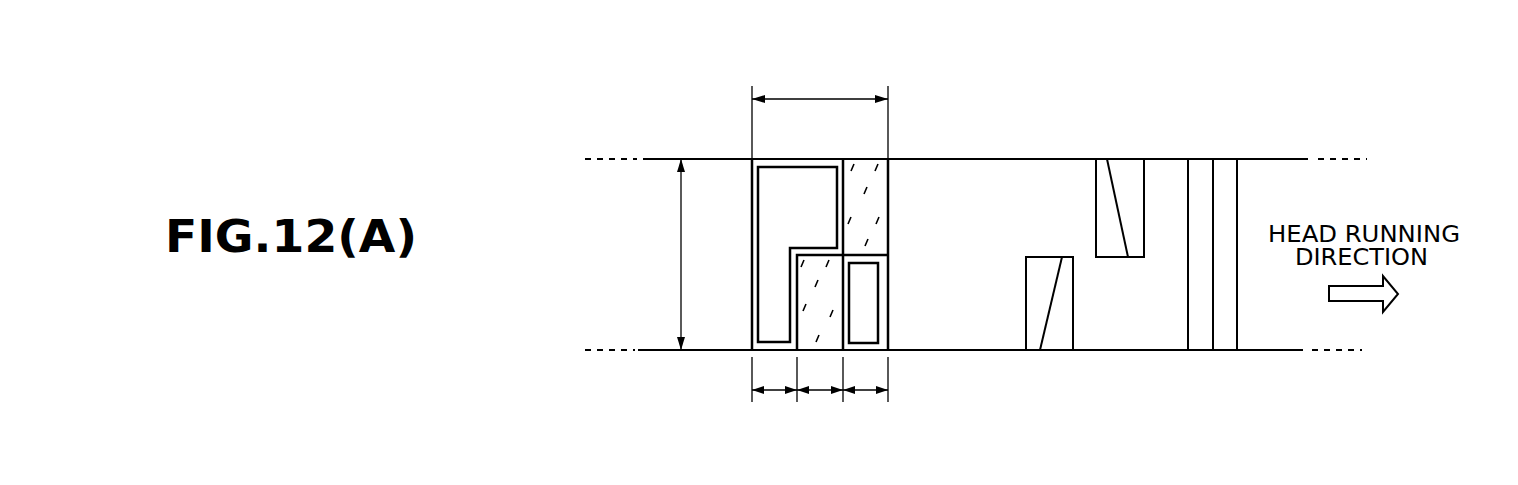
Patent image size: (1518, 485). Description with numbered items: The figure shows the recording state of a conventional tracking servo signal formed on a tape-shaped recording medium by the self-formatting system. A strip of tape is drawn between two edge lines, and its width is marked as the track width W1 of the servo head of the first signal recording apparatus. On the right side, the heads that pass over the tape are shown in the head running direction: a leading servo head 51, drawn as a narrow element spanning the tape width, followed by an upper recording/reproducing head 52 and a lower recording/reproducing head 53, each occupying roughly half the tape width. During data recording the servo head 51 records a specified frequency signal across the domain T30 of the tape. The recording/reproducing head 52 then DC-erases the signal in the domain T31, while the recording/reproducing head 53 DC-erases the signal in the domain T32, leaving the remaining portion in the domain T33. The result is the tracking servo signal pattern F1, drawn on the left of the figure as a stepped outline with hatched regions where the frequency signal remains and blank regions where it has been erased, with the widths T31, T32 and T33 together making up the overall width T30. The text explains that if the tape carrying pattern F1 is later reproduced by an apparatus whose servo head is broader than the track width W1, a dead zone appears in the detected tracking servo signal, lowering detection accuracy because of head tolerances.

The servo head 51 is at (1223, 173).
The recording/reproducing head 52 is at (1128, 178).
The recording/reproducing head 53 is at (1057, 340).
The tracking servo signal pattern F1 is at (820, 230).
The track width W1 is at (661, 254).
The domain T30 is at (820, 113).
The domain T31 is at (774, 408).
The domain T32 is at (820, 408).
The third segment width T33 is at (865, 408).